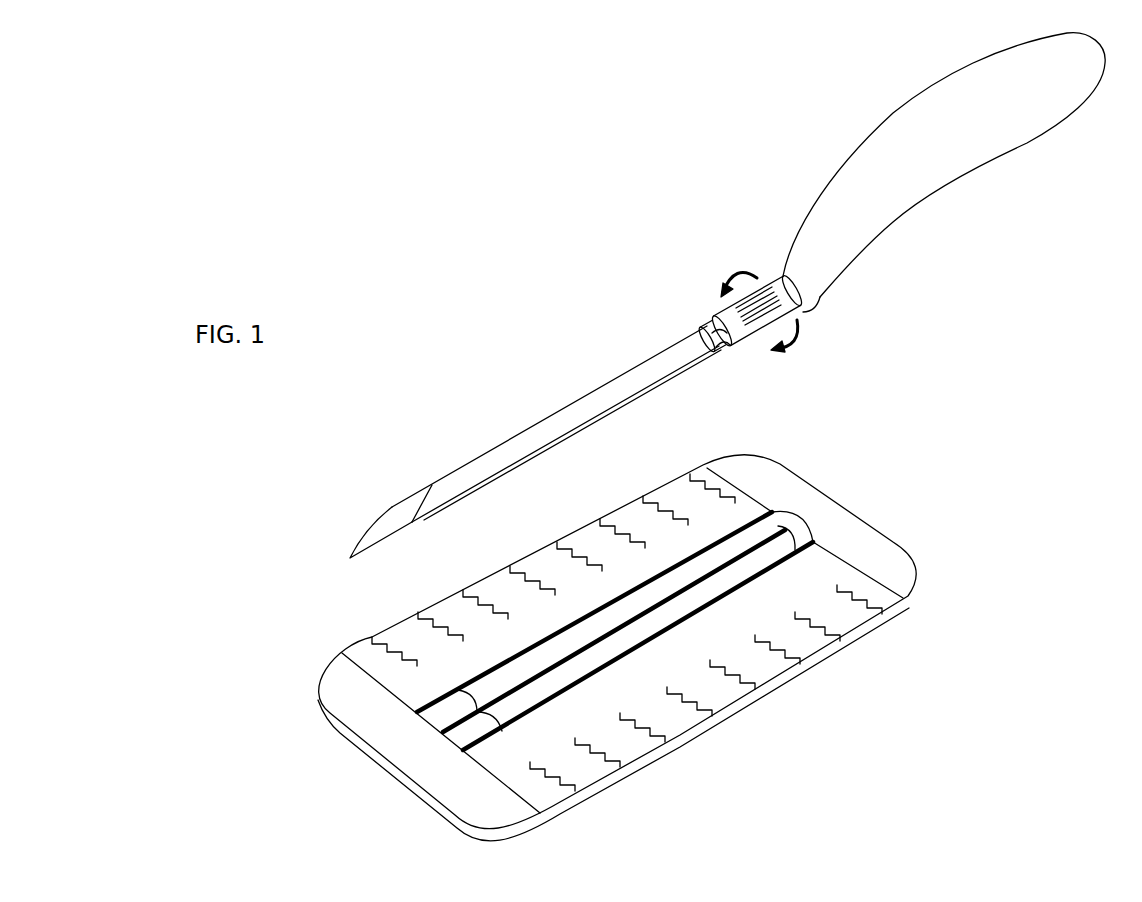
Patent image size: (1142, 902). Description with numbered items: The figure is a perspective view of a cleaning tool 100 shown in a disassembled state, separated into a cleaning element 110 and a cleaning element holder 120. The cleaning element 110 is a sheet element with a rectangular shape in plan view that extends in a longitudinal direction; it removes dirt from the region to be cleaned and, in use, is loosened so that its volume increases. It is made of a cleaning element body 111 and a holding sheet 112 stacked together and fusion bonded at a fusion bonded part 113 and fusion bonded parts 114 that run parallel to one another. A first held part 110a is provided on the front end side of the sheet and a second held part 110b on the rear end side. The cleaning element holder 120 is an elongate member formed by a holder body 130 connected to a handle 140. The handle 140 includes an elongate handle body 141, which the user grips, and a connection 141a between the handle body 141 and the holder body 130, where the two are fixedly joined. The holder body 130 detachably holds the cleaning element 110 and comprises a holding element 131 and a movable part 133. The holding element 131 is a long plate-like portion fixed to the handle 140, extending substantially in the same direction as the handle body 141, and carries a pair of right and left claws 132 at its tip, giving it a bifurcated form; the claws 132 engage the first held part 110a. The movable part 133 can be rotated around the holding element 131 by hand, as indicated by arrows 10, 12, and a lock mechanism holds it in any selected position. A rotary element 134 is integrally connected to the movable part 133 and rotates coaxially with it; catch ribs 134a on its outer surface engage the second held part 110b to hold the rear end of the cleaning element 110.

The cleaning tool 100 is at (463, 205).
The cleaning element 110 is at (887, 500).
The first held part 110a is at (460, 737).
The second held part 110b is at (803, 535).
The cleaning element body 111 is at (887, 627).
The holding sheet 112 is at (822, 653).
The fusion bonded part 113 is at (627, 625).
The fusion bonded parts 114 is at (680, 567).
The cleaning element holder 120 is at (833, 383).
The holder body 130 is at (578, 357).
The holding element 131 is at (498, 455).
The claws 132 is at (376, 541).
The movable part 133 is at (760, 348).
The rotary element 134 is at (722, 313).
The catch ribs 134a is at (737, 328).
The handle 140 is at (858, 138).
The handle body 141 is at (933, 163).
The connection 141a is at (810, 293).
The arrow 10 is at (739, 273).
The arrow 12 is at (797, 341).